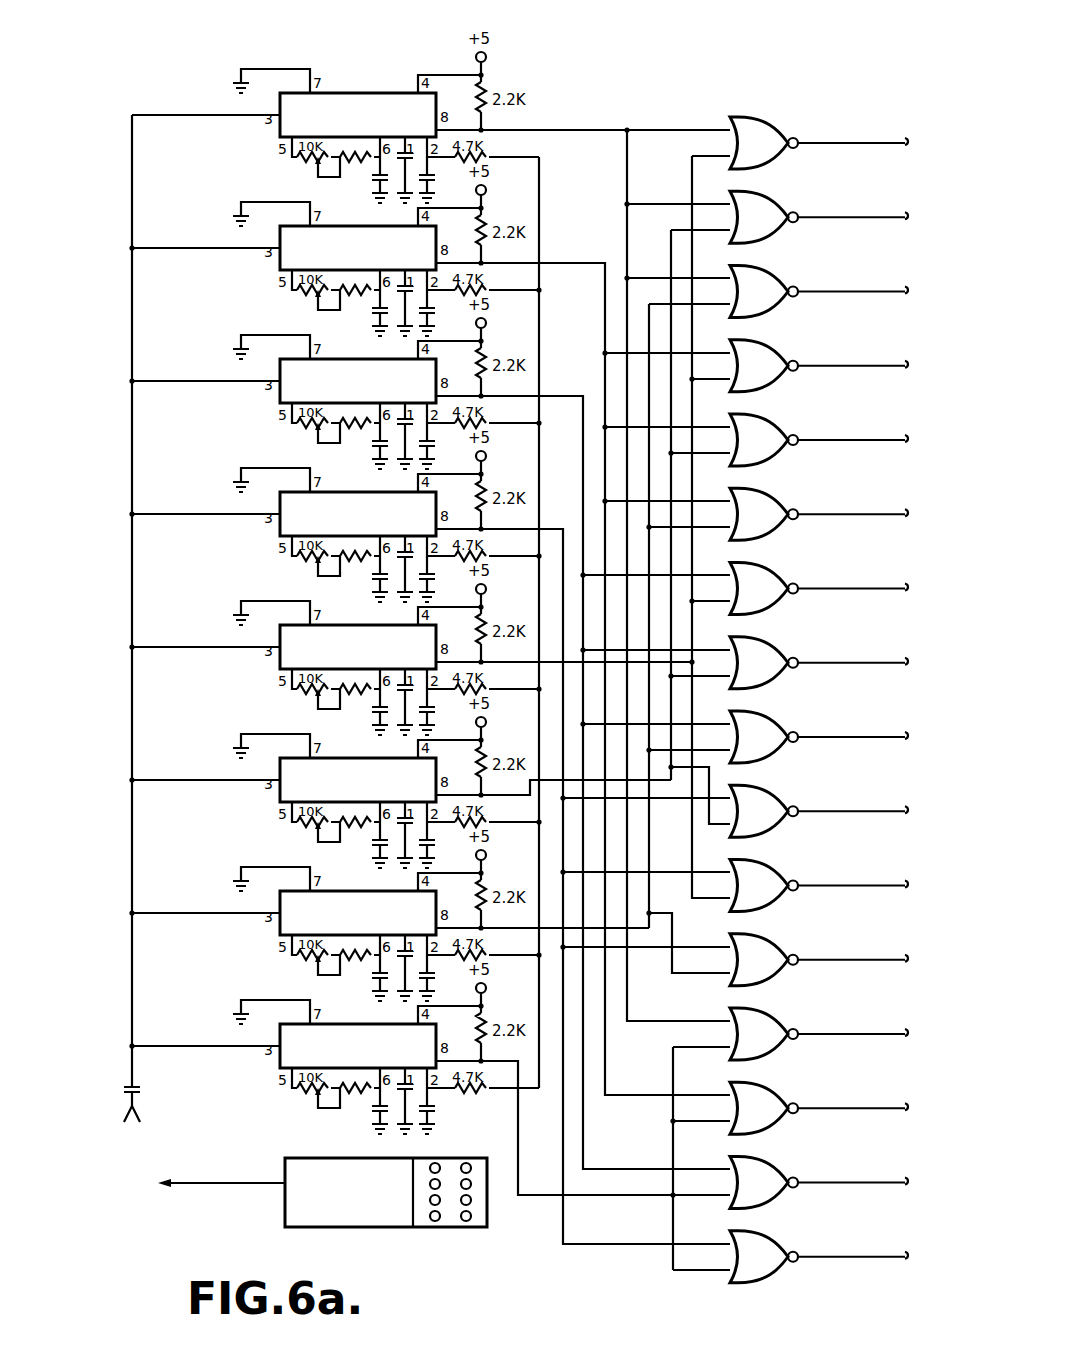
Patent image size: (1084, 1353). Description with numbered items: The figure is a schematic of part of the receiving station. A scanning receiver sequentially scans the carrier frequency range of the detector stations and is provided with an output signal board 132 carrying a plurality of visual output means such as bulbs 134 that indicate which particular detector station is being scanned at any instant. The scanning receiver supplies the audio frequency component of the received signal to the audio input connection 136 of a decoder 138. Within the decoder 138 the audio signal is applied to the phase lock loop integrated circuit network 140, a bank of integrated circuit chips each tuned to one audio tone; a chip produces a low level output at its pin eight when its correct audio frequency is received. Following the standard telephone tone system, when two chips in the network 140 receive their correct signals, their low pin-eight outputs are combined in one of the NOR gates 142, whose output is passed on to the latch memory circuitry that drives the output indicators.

The phase lock loop integrated circuit network 140 is at (357, 56).
The NOR gates 142 is at (672, 679).
The decoder 138 is at (755, 1289).
The audio input connection 136 is at (142, 1110).
The bulbs 134 is at (330, 1158).
The output signal board 132 is at (330, 1197).